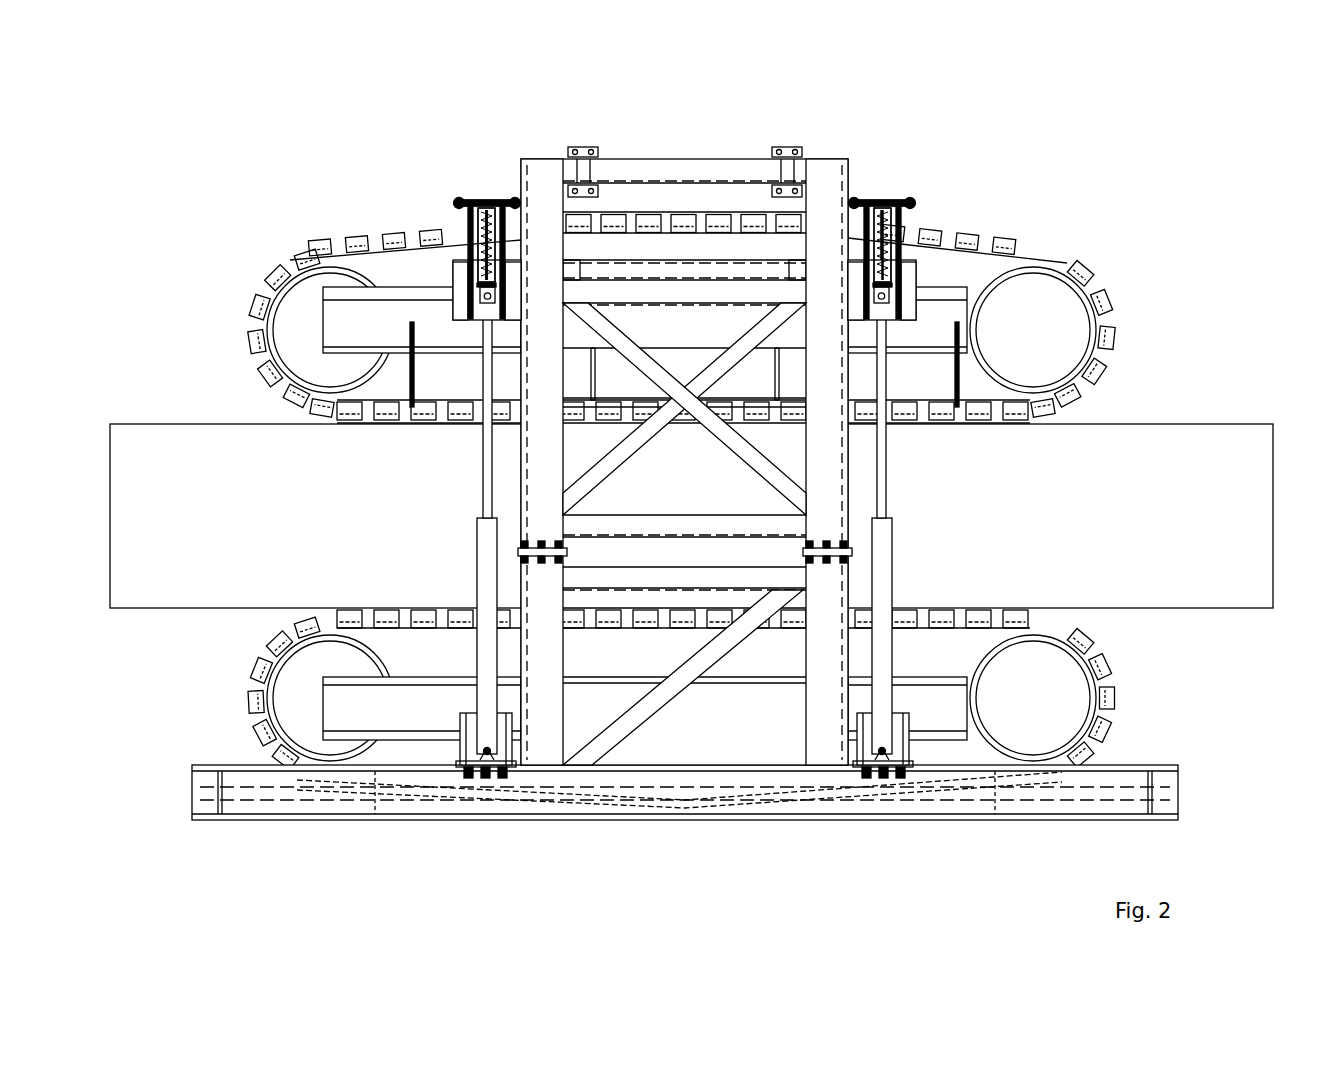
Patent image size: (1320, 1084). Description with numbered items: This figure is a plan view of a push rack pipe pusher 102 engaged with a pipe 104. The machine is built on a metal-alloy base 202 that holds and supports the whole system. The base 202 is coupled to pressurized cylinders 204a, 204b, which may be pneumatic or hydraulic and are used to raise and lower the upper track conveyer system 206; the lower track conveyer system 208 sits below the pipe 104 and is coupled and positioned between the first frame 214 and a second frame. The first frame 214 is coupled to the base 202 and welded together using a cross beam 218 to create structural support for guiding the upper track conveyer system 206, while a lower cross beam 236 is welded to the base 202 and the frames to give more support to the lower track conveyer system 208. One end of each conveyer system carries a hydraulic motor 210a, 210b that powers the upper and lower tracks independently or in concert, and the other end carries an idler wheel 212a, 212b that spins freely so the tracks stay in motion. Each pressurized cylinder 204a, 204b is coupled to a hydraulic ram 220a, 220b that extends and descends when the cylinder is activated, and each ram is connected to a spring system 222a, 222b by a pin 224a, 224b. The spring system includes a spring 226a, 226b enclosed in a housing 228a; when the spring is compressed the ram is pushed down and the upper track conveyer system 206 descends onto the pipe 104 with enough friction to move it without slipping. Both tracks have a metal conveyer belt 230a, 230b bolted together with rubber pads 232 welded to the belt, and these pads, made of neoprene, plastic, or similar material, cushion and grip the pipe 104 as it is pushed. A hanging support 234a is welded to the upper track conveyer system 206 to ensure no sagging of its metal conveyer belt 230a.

The pipe pusher 102 is at (1026, 103).
The pipe 104 is at (1165, 424).
The base 202 is at (1163, 766).
The pressurized cylinder 204a is at (486, 540).
The pressurized cylinder 204b is at (890, 545).
The upper track conveyer system 206 is at (338, 328).
The lower track conveyer system 208 is at (340, 712).
The hydraulic motor 210a is at (283, 736).
The hydraulic motor 210b is at (287, 348).
The idler wheel 212a is at (1060, 690).
The idler wheel 212b is at (1048, 336).
The first frame 214 is at (648, 160).
The cross beam 218 is at (612, 350).
The hydraulic ram 220a is at (482, 505).
The hydraulic ram 220b is at (892, 480).
The spring system 222a is at (509, 200).
The spring system 222b is at (861, 200).
The pin 224a is at (469, 200).
The pin 224b is at (895, 200).
The spring 226a is at (475, 222).
The spring 226b is at (900, 225).
The housing 228a is at (493, 205).
The metal conveyer belt 230a is at (1070, 262).
The metal conveyer belt 230b is at (268, 658).
The rubber pads 232 is at (304, 242).
The hanging support 234a is at (1012, 420).
The lower cross beam 236 is at (697, 664).